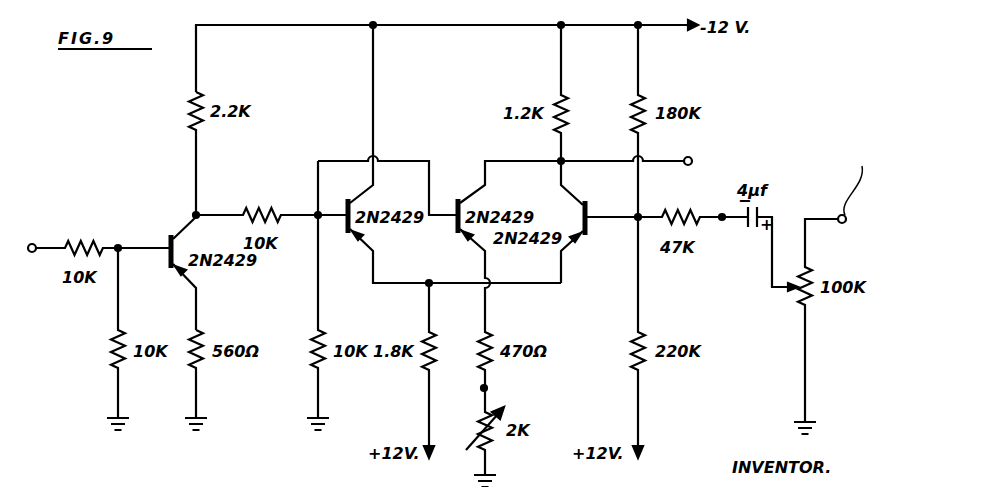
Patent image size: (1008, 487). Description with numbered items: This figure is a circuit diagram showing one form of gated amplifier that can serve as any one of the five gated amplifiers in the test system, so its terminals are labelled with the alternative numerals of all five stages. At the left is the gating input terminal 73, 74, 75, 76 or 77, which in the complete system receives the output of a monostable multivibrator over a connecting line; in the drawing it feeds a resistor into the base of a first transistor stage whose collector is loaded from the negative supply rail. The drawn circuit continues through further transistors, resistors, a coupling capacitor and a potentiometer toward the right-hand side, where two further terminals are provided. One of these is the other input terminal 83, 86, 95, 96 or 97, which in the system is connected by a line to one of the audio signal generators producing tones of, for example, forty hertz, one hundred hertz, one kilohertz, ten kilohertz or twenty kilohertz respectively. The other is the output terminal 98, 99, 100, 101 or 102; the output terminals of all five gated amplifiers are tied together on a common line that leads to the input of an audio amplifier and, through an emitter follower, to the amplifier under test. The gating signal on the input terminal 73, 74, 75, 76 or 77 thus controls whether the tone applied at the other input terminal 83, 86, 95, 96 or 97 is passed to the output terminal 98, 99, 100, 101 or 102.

The input terminal 73 is at (32, 244).
The input terminal 74 is at (102, 221).
The input terminal 75 is at (102, 221).
The input terminal 76 is at (102, 221).
The input terminal 77 is at (102, 221).
The output terminal 98 is at (780, 145).
The output terminal 99 is at (780, 145).
The output terminal 100 is at (780, 145).
The output terminal 101 is at (780, 145).
The output terminal 102 is at (780, 145).
The other input terminal 83 is at (688, 157).
The other input terminal 86 is at (780, 145).
The other input terminal 95 is at (780, 145).
The other input terminal 96 is at (780, 145).
The other input terminal 97 is at (780, 145).